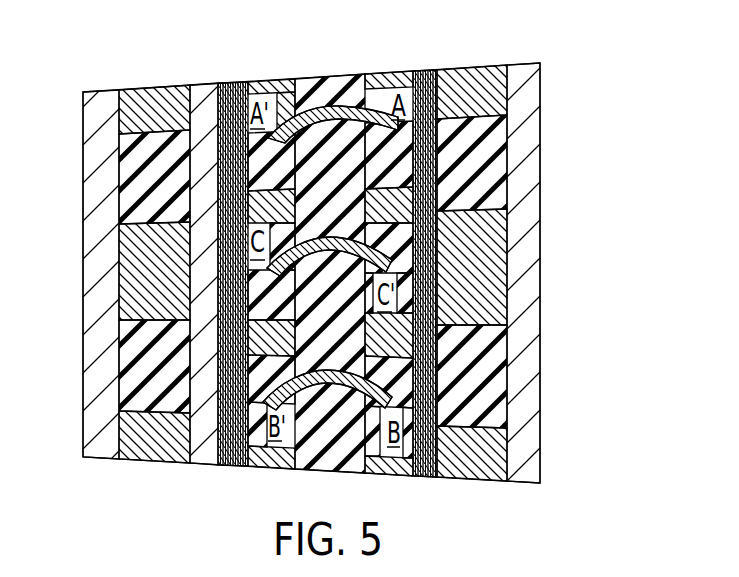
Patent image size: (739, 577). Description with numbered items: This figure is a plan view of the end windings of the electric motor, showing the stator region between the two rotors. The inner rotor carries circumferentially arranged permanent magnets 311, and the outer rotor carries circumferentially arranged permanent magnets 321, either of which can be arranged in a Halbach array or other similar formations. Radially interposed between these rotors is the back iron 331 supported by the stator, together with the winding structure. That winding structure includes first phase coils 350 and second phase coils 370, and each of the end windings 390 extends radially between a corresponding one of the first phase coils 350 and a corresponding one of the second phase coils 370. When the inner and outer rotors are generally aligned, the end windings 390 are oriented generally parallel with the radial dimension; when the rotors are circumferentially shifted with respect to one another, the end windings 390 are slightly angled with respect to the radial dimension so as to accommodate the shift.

The permanent magnets 311 is at (130, 156).
The permanent magnets 321 is at (488, 163).
The back iron 331 is at (313, 88).
The first phase coils 350 is at (255, 403).
The second phase coils 370 is at (397, 172).
The end windings 390 is at (392, 260).